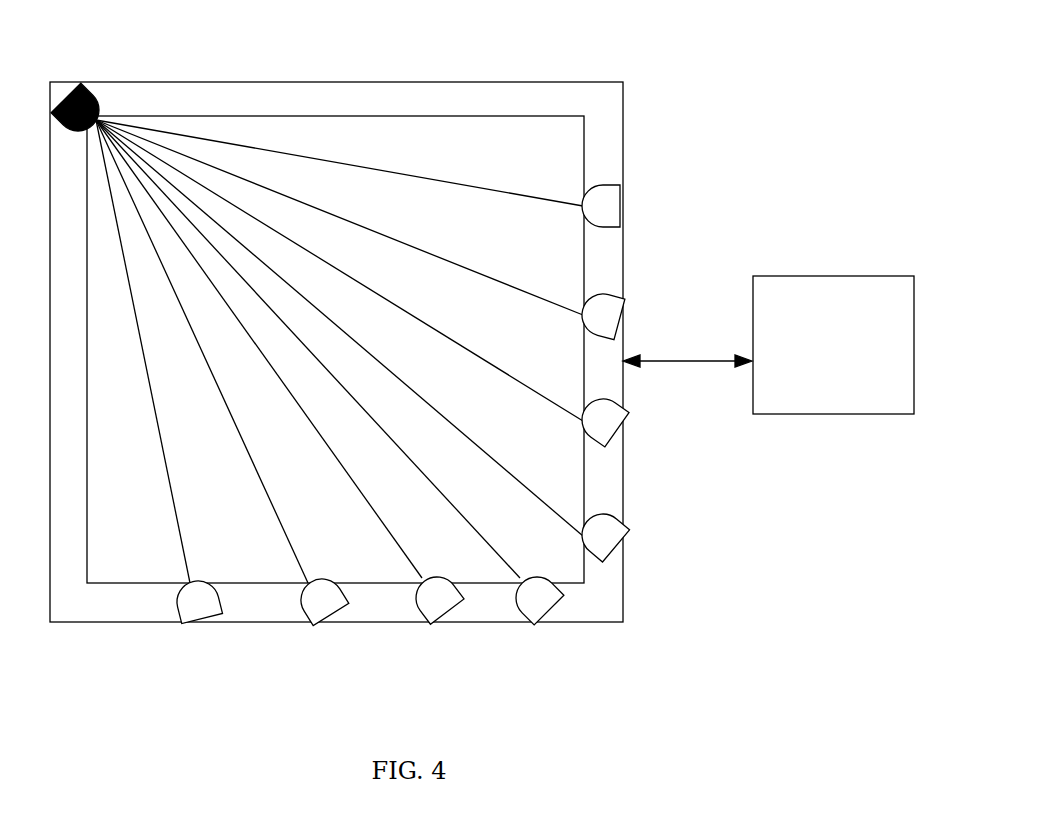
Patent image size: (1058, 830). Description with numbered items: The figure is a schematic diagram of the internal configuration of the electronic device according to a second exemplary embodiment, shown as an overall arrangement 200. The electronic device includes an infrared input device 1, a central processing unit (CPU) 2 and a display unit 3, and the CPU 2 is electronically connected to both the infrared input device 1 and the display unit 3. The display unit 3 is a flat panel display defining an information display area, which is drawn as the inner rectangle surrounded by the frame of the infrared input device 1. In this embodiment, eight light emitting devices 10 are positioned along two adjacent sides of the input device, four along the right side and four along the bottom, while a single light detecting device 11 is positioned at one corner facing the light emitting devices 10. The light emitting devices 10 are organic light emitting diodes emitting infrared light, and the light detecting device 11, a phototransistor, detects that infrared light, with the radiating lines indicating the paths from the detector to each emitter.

The optical touch system 200 is at (668, 83).
The infrared input device 1 is at (480, 82).
The display unit 3 is at (300, 116).
The light detecting device 11 is at (80, 82).
The light emitting device 10 is at (623, 203).
The central processing unit (CPU) 2 is at (820, 276).